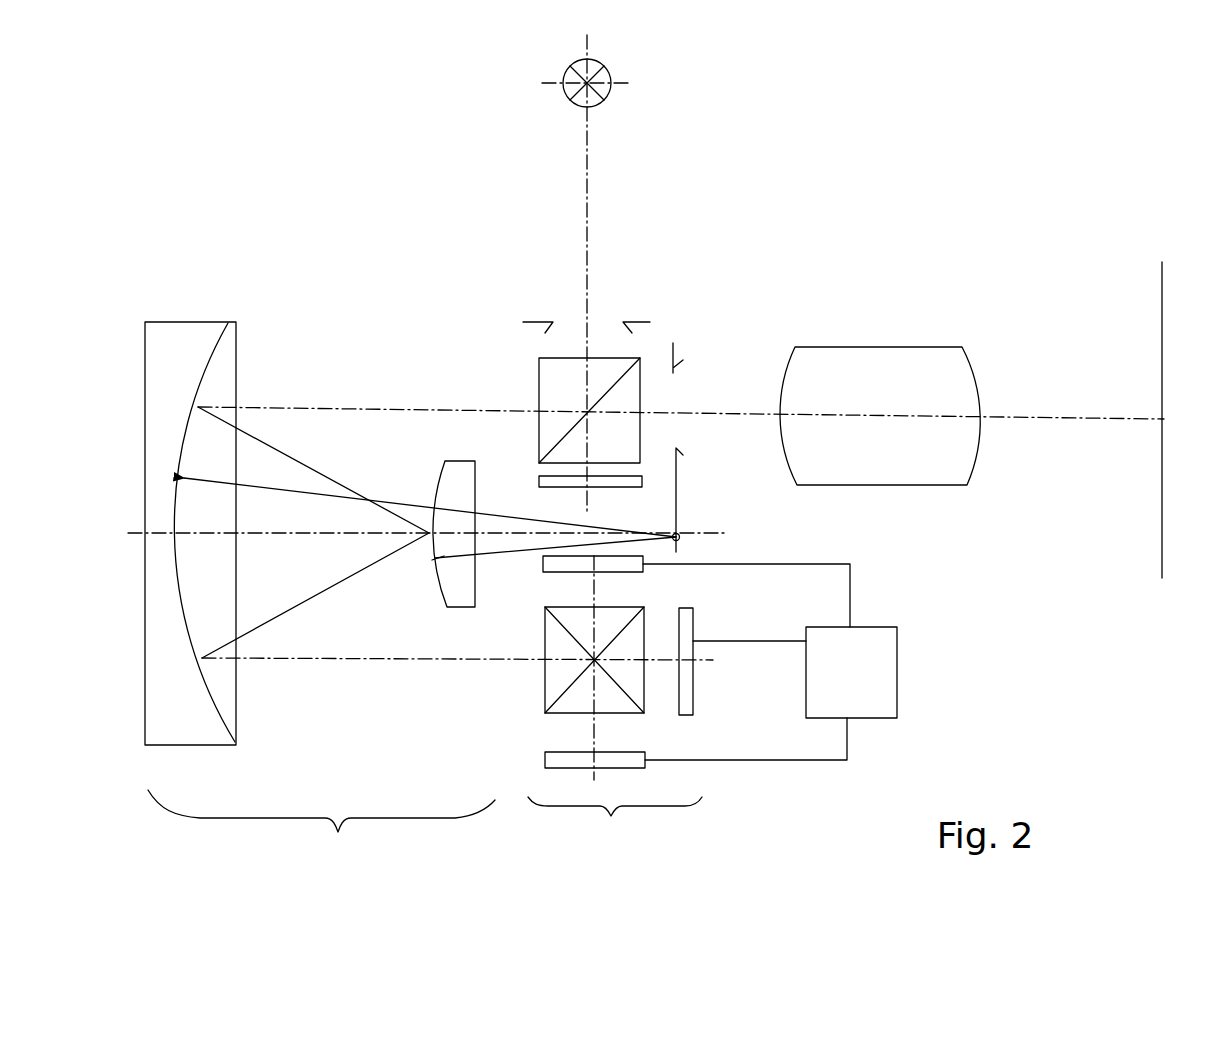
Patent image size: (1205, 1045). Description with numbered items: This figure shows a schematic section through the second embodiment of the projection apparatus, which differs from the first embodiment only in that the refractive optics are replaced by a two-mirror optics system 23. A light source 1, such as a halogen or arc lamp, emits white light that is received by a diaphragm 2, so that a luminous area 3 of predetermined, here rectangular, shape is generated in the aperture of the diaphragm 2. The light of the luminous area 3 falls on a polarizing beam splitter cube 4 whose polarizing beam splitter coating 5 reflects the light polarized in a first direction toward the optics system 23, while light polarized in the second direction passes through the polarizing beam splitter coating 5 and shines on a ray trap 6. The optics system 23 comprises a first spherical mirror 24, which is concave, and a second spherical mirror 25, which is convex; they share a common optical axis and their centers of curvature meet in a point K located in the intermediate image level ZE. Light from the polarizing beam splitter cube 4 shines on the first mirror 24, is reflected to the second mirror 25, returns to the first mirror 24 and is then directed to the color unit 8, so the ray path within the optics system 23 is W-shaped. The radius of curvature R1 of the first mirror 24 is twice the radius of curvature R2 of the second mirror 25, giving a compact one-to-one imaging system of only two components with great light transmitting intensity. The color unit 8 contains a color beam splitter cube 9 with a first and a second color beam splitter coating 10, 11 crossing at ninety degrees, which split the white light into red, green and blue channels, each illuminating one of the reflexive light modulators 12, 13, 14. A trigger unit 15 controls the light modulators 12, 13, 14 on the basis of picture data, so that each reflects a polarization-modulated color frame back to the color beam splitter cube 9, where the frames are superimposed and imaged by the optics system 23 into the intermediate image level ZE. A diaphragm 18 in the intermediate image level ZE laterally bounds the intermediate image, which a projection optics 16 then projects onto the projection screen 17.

The light source 1 is at (563, 97).
The diaphragm 2 is at (540, 320).
The luminous area 3 is at (573, 320).
The polarizing beam splitter cube 4 is at (530, 377).
The polarizing beam splitter coating 5 is at (557, 433).
The ray trap 6 is at (633, 488).
The diaphragm 18 is at (680, 345).
The intermediate image level ZE is at (685, 351).
The projection optics 16 is at (917, 347).
The projection screen 17 is at (1160, 278).
The radius of curvature of the first mirror R1 is at (395, 500).
The radius of curvature of the second mirror R2 is at (505, 560).
The point K is at (682, 531).
The reflexive light modulator 14 is at (680, 537).
The first spherical mirror 24 is at (230, 722).
The second spherical mirror 25 is at (445, 603).
The optics system 23 is at (321, 835).
The color beam splitter cube 9 is at (543, 722).
The first color beam splitter coating 10 is at (553, 692).
The second color beam splitter coating 11 is at (570, 635).
The reflexive light modulator 12 is at (645, 765).
The reflexive light modulator 13 is at (693, 700).
The trigger unit 15 is at (897, 675).
The color unit 8 is at (615, 710).